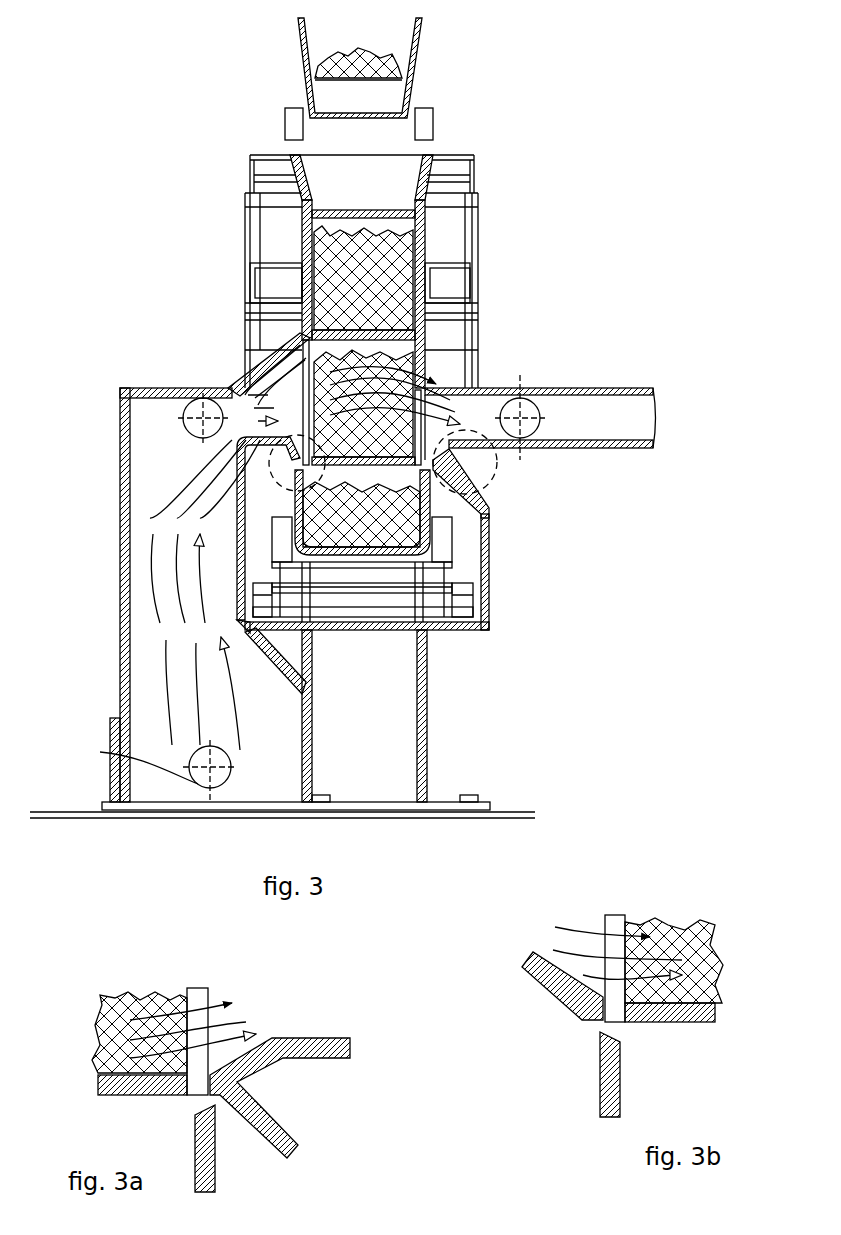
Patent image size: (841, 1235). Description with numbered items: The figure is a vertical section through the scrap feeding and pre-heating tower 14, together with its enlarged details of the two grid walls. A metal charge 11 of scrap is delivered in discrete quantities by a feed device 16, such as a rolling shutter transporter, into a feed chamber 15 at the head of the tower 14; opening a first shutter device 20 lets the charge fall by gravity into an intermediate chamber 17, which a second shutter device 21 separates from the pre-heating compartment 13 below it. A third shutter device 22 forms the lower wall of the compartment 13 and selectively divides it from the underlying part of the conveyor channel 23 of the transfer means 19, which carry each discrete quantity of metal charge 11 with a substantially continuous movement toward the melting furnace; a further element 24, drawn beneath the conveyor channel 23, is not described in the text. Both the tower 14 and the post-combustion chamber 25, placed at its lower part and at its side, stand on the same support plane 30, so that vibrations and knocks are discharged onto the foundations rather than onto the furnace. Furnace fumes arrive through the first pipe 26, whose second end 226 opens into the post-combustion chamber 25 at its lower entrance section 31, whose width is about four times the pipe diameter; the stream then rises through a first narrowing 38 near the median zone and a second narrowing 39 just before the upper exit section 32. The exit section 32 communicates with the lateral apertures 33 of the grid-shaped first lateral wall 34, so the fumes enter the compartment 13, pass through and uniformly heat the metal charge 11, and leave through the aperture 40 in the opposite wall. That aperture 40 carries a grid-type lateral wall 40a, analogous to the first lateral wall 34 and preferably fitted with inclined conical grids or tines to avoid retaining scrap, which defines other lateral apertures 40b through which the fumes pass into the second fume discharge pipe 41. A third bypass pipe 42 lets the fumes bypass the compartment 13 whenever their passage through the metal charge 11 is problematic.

In FIG. 3, the metal charge 11 is at (330, 243).
In FIG. 3B, the metal charge 11 is at (685, 930).
In FIG. 3, the pre-heating compartment 13 is at (428, 348).
In FIG. 3, the tower 14 is at (428, 234).
In FIG. 3, the feed chamber 15 is at (445, 158).
In FIG. 3, the feed device 16 is at (410, 74).
In FIG. 3, the intermediate chamber 17 is at (303, 258).
In FIG. 3, the transfer means 19 is at (470, 540).
In FIG. 3, the first shutter device 20 is at (428, 208).
In FIG. 3, the second shutter device 21 is at (432, 285).
In FIG. 3, the third shutter device 22 is at (428, 476).
In FIG. 3A, the third shutter device 22 is at (115, 1085).
In FIG. 3B, the third shutter device 22 is at (668, 1015).
In FIG. 3, the conveyor channel 23 is at (440, 535).
In FIG. 3A, the conveyor channel 23 is at (210, 1152).
In FIG. 3B, the conveyor channel 23 is at (610, 1070).
In FIG. 3, the support frame 24 is at (440, 595).
In FIG. 3, the post-combustion chamber 25 is at (120, 640).
In FIG. 3, the first pipe 26 is at (215, 790).
In FIG. 3, the second end 226 is at (126, 761).
In FIG. 3, the support plane 30 is at (150, 806).
In FIG. 3, the lower entrance section 31 is at (298, 770).
In FIG. 3, the upper exit section 32 is at (258, 385).
In FIG. 3B, the upper exit section 32 is at (560, 995).
In FIG. 3, the lateral apertures 33 is at (285, 365).
In FIG. 3B, the lateral apertures 33 is at (628, 955).
In FIG. 3, the first lateral wall 34 is at (306, 350).
In FIG. 3B, the first lateral wall 34 is at (617, 920).
In FIG. 3, the first narrowing 38 is at (275, 670).
In FIG. 3, the second narrowing 39 is at (238, 410).
In FIG. 3, the aperture 40 is at (438, 404).
In FIG. 3, the grid-type lateral wall 40a is at (455, 448).
In FIG. 3A, the grid-type lateral wall 40a is at (200, 1000).
In FIG. 3A, the other lateral apertures 40b is at (175, 1005).
In FIG. 3, the second fume discharge pipe 41 is at (625, 390).
In FIG. 3A, the second fume discharge pipe 41 is at (285, 1052).
In FIG. 3, the third bypass pipe 42 is at (200, 400).